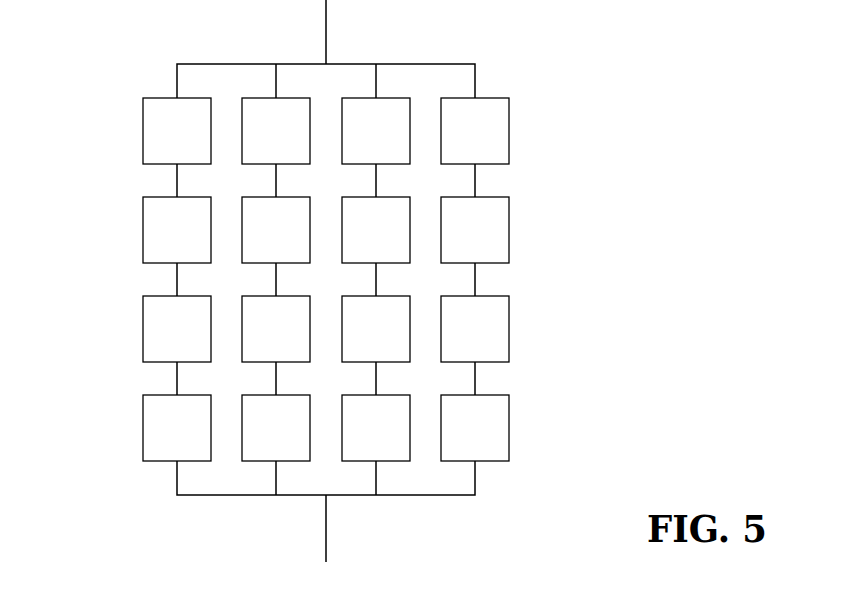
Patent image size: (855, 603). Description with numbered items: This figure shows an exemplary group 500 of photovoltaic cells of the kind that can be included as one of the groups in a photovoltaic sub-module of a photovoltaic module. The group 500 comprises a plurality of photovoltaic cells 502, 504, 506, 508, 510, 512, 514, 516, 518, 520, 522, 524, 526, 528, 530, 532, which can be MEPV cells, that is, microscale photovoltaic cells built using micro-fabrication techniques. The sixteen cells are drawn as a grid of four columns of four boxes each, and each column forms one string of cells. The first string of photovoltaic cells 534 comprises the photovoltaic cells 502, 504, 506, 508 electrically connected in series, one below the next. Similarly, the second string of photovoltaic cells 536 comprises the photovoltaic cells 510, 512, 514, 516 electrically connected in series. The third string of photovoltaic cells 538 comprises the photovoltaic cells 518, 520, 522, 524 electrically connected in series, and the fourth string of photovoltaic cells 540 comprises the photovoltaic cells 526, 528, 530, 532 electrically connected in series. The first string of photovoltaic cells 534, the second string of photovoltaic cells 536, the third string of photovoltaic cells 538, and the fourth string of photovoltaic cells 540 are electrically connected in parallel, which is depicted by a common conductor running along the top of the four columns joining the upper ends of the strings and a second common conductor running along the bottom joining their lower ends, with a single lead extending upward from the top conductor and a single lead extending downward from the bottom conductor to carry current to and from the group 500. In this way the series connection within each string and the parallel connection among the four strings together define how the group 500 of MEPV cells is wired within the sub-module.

The group 500 is at (550, 112).
The photovoltaic cell 502 is at (161, 142).
The photovoltaic cell 504 is at (161, 241).
The photovoltaic cell 506 is at (161, 340).
The photovoltaic cell 508 is at (161, 439).
The photovoltaic cell 510 is at (260, 142).
The photovoltaic cell 512 is at (260, 241).
The photovoltaic cell 514 is at (260, 340).
The photovoltaic cell 516 is at (260, 439).
The photovoltaic cell 518 is at (360, 142).
The photovoltaic cell 520 is at (360, 241).
The photovoltaic cell 522 is at (360, 340).
The photovoltaic cell 524 is at (360, 439).
The photovoltaic cell 526 is at (459, 142).
The photovoltaic cell 528 is at (459, 241).
The photovoltaic cell 530 is at (459, 340).
The photovoltaic cell 532 is at (459, 439).
The first string of photovoltaic cells 534 is at (130, 68).
The second string of photovoltaic cells 536 is at (239, 479).
The third string of photovoltaic cells 538 is at (396, 66).
The fourth string of photovoltaic cells 540 is at (497, 491).